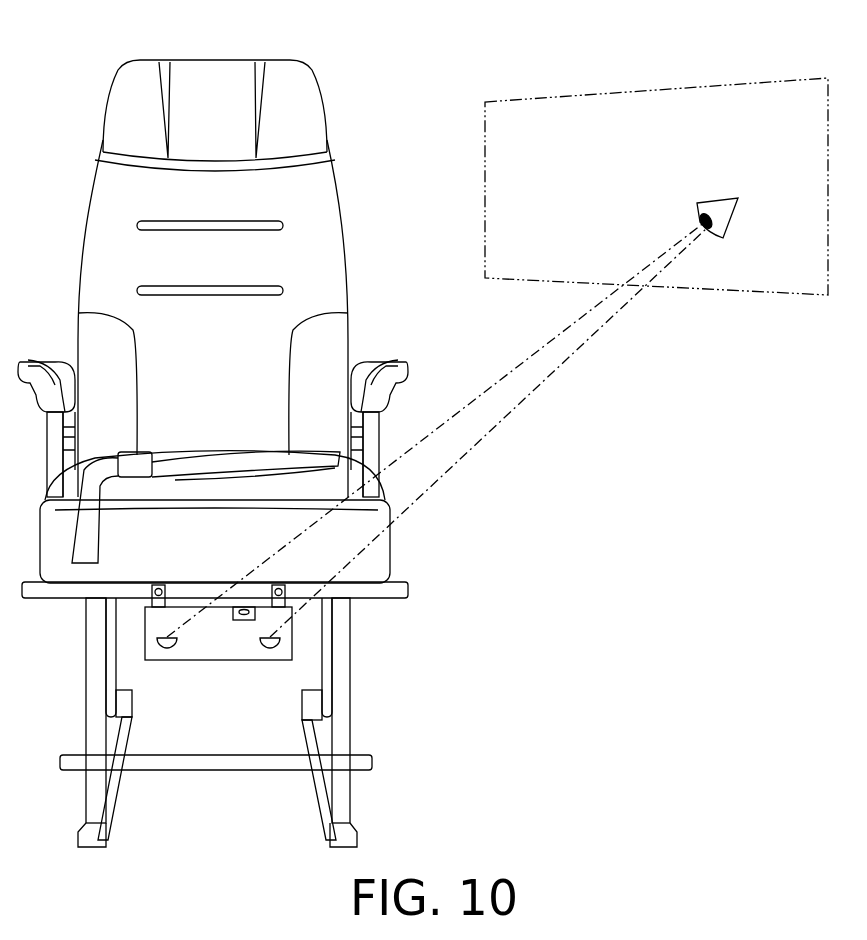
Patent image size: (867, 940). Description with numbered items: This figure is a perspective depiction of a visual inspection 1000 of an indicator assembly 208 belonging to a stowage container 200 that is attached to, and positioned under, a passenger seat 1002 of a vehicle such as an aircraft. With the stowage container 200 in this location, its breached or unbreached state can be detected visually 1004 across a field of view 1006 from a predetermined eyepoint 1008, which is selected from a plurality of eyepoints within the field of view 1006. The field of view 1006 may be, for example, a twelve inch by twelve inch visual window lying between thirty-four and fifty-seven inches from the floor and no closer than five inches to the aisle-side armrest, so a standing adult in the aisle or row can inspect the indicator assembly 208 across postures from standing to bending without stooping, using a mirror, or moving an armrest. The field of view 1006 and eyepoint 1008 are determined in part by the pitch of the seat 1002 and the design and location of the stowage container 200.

The stowage container 200 is at (145, 632).
The indicator assembly 208 is at (217, 690).
The visual inspection 1000 is at (596, 72).
The seat 1002 is at (93, 197).
The visual detection 1004 is at (512, 408).
The field of view 1006 is at (485, 190).
The eyepoint 1008 is at (720, 185).